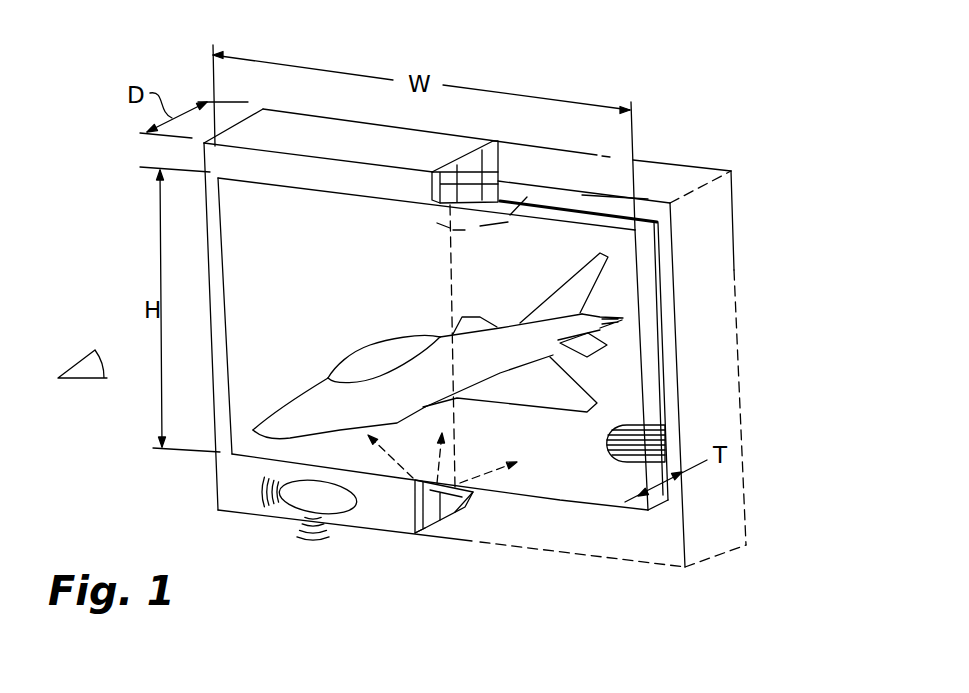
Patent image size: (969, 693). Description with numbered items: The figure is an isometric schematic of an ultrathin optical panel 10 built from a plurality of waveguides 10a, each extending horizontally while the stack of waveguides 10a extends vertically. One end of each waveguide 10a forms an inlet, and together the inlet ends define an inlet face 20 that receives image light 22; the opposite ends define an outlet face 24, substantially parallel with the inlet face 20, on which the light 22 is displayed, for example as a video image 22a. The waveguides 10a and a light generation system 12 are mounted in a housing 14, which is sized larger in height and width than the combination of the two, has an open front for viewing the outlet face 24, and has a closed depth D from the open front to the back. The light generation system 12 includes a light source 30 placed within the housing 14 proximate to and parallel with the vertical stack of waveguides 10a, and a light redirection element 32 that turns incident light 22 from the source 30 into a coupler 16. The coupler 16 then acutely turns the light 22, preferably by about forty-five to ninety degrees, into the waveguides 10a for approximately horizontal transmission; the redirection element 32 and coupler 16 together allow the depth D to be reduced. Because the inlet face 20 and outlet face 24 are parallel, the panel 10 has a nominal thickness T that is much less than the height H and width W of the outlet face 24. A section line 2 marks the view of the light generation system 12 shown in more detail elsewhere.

The section line 2- 2 is at (609, 145).
The optical panel 10 is at (756, 181).
The waveguides 10a is at (613, 438).
The light generation system 12 is at (496, 185).
The housing 14 is at (240, 486).
The coupler 16 is at (668, 278).
The inlet face 20 is at (667, 352).
The image light 22 is at (458, 284).
The video image 22a is at (397, 340).
The outlet face 24 is at (337, 265).
The light source 30 is at (534, 188).
The light redirection element 32 is at (435, 530).